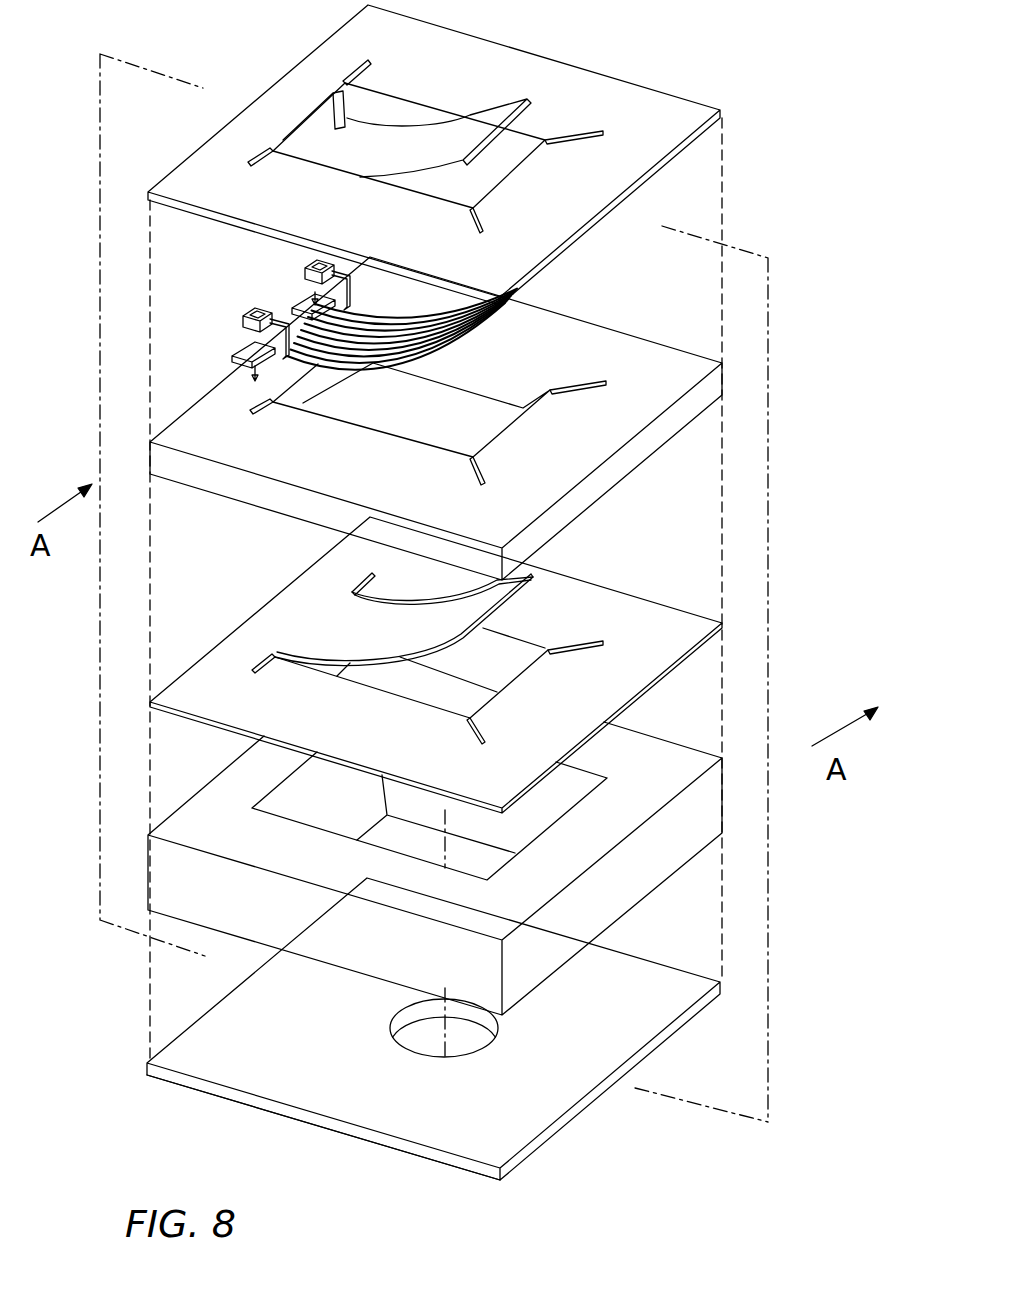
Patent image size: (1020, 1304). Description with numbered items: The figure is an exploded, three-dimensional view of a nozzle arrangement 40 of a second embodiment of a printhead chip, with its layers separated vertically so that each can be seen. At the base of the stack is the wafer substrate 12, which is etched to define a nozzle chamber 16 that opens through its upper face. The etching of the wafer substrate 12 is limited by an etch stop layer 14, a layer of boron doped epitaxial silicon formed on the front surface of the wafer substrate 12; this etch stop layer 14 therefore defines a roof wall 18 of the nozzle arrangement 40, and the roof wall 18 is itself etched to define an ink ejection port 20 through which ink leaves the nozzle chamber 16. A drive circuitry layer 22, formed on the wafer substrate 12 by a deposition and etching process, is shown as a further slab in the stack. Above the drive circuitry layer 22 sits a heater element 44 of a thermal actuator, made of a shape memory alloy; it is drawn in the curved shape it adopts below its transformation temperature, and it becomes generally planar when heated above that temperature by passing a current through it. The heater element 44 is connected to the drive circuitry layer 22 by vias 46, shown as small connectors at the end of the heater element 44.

The nozzle arrangement 40 is at (722, 52).
The vias 46 is at (300, 268).
The heater element 44 is at (532, 284).
The drive circuitry layer 22 is at (150, 454).
The nozzle chamber 16 is at (278, 801).
The wafer substrate 12 is at (637, 870).
The etch stop layer 14 is at (553, 1128).
The roof wall 18 is at (363, 1140).
The ink ejection port 20 is at (426, 1038).